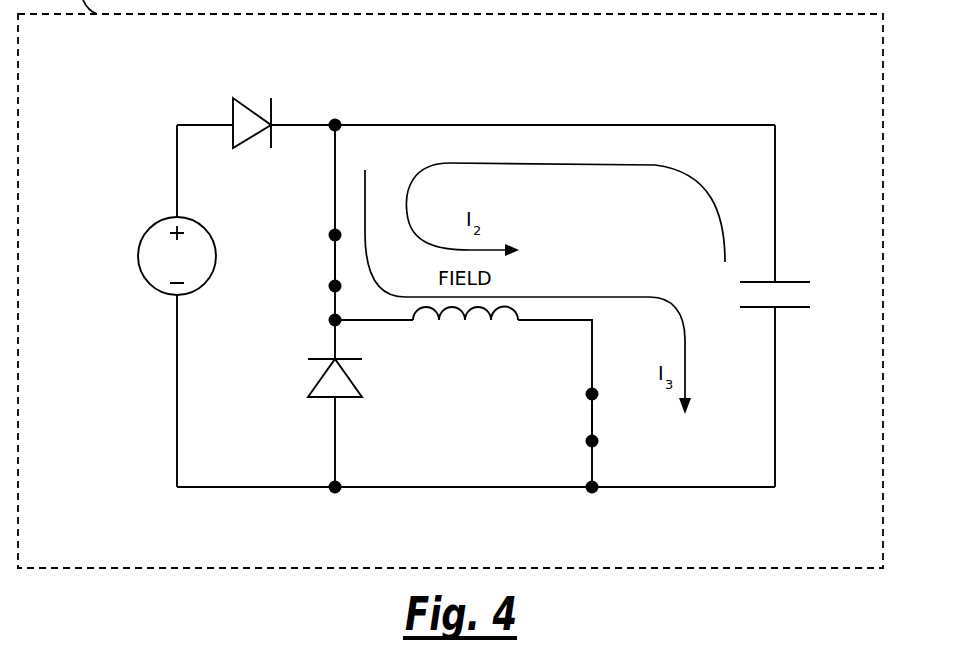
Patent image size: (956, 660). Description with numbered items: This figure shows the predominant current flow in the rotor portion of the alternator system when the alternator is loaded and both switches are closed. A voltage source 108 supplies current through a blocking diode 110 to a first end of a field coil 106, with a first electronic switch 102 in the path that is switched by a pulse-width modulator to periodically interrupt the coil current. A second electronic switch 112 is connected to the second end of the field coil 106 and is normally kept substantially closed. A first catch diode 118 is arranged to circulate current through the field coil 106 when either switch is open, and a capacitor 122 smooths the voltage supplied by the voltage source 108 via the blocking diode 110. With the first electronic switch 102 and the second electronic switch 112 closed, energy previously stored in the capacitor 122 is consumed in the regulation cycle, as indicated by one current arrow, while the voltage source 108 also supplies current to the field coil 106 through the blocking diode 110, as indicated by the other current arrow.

The first electronic switch 102 is at (333, 258).
The field coil 106 is at (440, 317).
The voltage source 108 is at (150, 222).
The blocking diode 110 is at (272, 108).
The second electronic switch 112 is at (595, 418).
The first catch diode 118 is at (327, 359).
The capacitor 122 is at (795, 282).